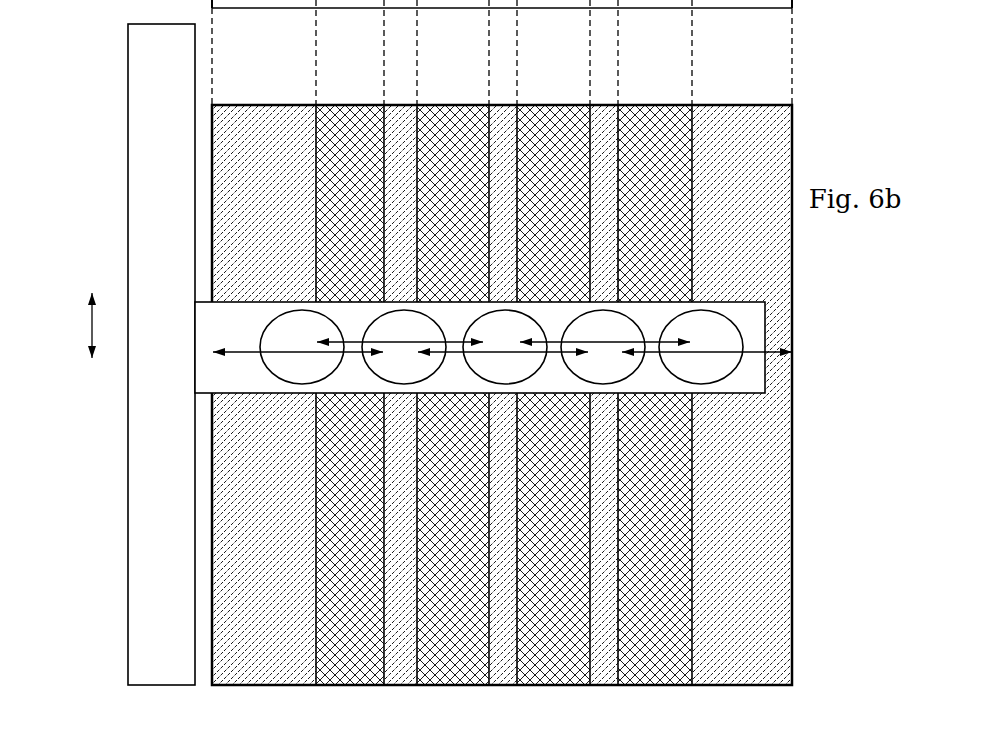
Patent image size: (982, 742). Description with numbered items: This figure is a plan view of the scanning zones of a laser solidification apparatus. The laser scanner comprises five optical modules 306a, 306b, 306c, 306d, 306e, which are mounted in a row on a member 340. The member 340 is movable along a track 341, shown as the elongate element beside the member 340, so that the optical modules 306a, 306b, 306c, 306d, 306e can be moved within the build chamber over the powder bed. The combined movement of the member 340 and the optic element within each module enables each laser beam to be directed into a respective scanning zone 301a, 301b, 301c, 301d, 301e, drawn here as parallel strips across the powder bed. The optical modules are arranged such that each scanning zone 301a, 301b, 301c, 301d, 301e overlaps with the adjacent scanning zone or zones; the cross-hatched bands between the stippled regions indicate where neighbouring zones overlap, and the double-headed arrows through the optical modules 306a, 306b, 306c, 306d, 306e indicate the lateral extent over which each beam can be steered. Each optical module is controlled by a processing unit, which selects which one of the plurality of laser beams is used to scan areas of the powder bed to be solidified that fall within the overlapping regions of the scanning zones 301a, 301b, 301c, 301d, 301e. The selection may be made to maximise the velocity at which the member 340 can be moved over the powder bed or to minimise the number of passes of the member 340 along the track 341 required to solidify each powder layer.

The scanning zone 301a is at (278, 395).
The scanning zone 301b is at (398, 395).
The scanning zone 301c is at (500, 395).
The scanning zone 301d is at (599, 395).
The scanning zone 301e is at (731, 395).
The optical module 306a is at (325, 370).
The optical module 306b is at (413, 370).
The optical module 306c is at (497, 370).
The optical module 306d is at (600, 370).
The optical module 306e is at (708, 375).
The member 340 is at (228, 378).
The track 341 is at (145, 117).